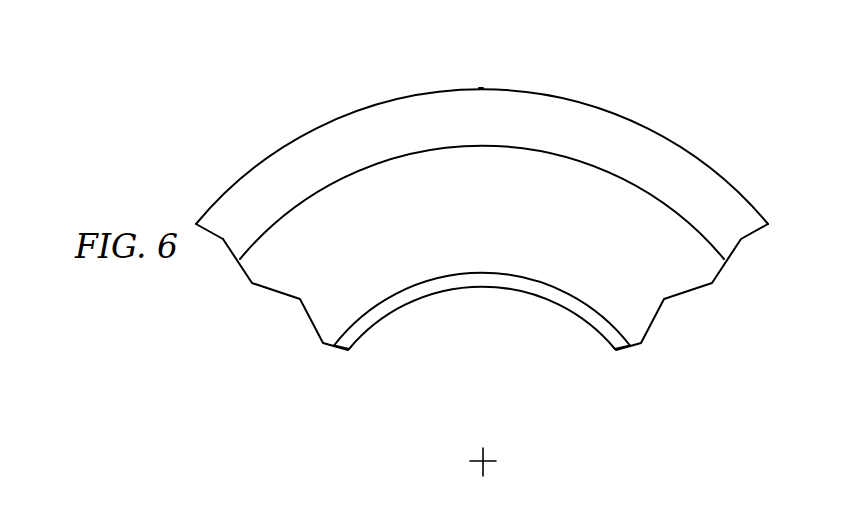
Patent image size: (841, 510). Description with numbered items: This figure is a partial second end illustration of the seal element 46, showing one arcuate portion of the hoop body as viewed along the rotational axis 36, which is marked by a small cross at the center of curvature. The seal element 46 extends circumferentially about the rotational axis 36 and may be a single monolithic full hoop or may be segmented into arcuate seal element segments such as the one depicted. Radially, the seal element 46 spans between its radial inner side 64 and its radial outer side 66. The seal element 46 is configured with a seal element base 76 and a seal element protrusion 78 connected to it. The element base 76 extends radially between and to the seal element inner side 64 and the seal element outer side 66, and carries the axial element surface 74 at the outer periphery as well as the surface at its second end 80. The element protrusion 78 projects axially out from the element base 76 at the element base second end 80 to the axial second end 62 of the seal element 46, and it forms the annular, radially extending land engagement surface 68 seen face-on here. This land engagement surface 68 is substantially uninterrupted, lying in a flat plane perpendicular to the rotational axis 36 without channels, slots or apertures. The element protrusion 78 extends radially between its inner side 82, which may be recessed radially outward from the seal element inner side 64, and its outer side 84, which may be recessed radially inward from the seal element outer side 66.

The rotational axis 36 is at (486, 463).
The seal element 46 is at (716, 143).
The axial second end 62 is at (611, 292).
The radial inner side 64 is at (460, 300).
The radial outer side 66 is at (546, 78).
The land engagement surface 68 is at (490, 227).
The axial element surface 74 is at (481, 88).
The seal element base 76 is at (217, 251).
The seal element protrusion 78 is at (276, 311).
The second end of the element base 80 is at (249, 197).
The inner side of the element protrusion 82 is at (381, 316).
The outer side of the element protrusion 84 is at (371, 157).